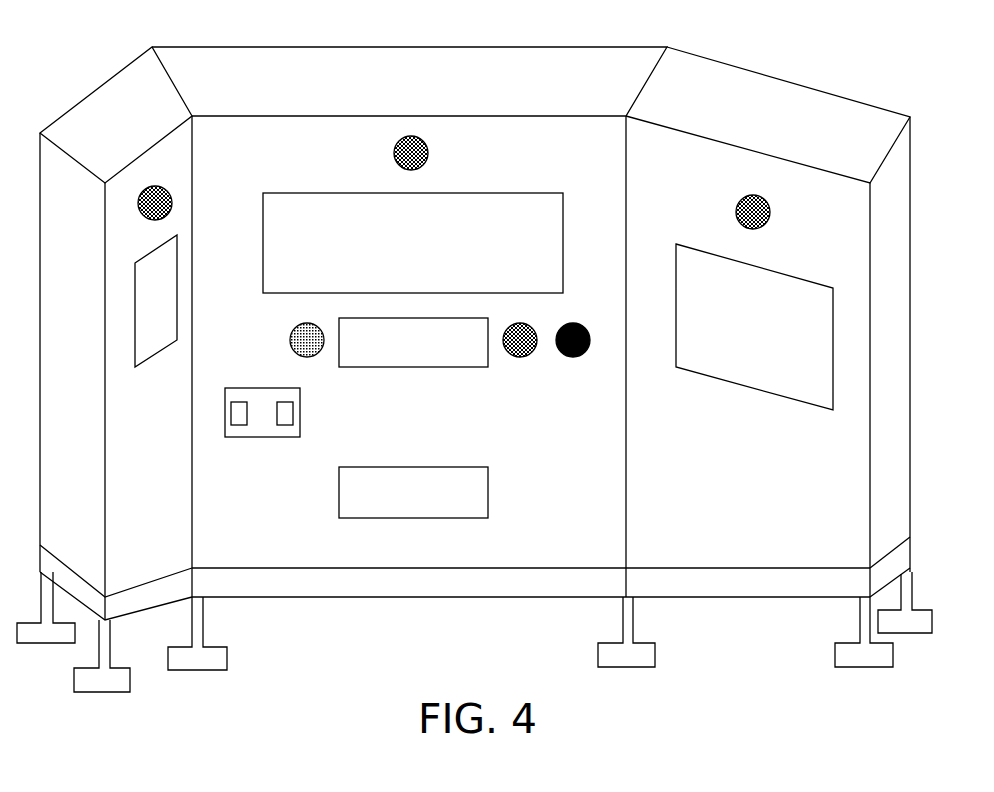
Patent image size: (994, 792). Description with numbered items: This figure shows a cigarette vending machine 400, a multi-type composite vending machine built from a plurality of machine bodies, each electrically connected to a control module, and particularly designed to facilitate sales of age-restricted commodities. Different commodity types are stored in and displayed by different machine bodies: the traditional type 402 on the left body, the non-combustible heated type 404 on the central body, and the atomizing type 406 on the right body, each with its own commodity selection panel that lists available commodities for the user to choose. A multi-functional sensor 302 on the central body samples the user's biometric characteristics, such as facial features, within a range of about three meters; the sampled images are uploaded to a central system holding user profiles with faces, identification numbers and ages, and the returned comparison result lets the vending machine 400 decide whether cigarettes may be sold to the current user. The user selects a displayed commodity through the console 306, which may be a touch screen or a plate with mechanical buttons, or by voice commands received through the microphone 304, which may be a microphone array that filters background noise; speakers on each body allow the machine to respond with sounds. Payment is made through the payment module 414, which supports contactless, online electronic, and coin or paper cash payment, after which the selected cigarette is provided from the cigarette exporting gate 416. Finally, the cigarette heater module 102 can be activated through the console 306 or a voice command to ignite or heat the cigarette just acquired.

The cigarette vending machine 400 is at (84, 31).
The traditional type 402 is at (154, 333).
The non-combustible heated type 404 is at (511, 322).
The atomizing type 406 is at (768, 322).
The sensor 302 is at (307, 357).
The microphone 304 is at (520, 357).
The console 306 is at (437, 367).
The cigarette heater module 102 is at (573, 357).
The payment module 414 is at (258, 438).
The cigarette exporting gate 416 is at (490, 490).